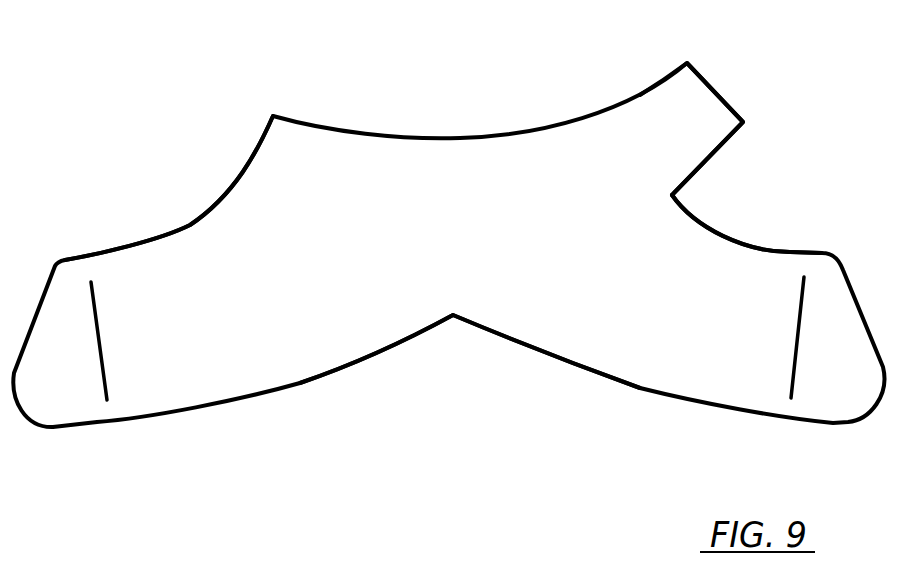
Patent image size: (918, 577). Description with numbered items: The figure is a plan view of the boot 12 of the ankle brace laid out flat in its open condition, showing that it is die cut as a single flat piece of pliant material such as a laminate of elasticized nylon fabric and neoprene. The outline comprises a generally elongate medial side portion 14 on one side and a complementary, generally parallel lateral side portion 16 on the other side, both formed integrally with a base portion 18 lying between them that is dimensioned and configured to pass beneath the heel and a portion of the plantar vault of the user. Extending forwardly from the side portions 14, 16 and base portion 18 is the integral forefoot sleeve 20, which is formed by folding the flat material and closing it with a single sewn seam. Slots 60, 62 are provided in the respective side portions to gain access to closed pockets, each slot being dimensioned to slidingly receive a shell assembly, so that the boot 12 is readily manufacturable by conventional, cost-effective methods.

The boot 12 is at (531, 102).
The medial side portion 14 is at (740, 258).
The lateral side portion 16 is at (154, 260).
The base portion 18 is at (433, 295).
The forefoot sleeve 20 is at (703, 112).
The slot 60 is at (793, 357).
The slot 62 is at (104, 356).